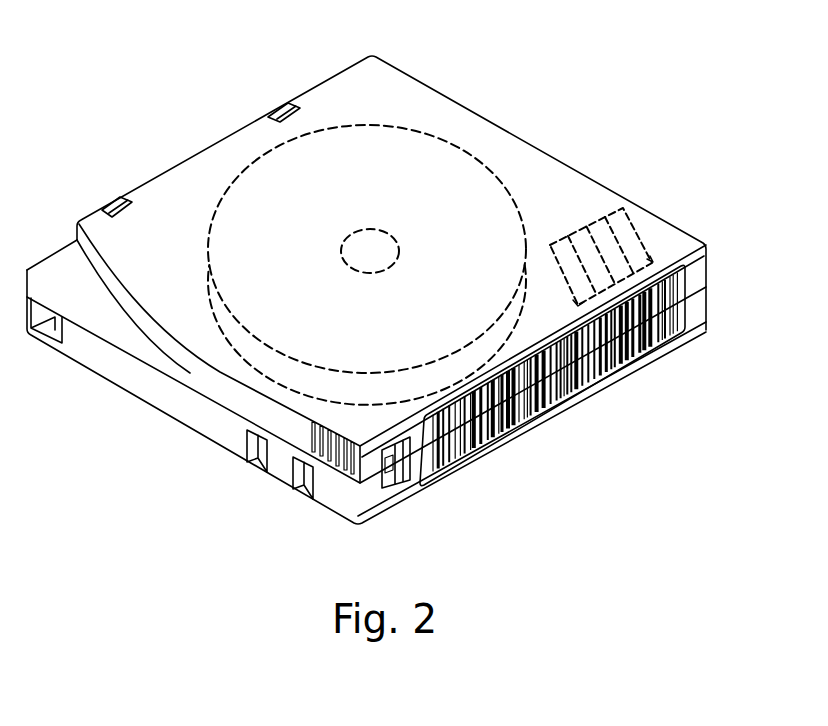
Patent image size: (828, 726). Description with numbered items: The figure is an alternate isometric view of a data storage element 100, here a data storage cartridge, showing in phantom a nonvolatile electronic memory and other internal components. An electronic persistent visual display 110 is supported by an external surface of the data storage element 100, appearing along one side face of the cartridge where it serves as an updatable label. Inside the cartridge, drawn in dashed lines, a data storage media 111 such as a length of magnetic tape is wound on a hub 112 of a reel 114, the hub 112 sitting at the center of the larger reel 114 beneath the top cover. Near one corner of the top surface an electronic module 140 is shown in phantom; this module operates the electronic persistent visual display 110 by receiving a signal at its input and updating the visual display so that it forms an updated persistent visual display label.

The data storage element 100 is at (97, 447).
The electronic persistent visual display 110 is at (643, 355).
The data storage media 111 is at (282, 362).
The hub 112 is at (373, 229).
The reel 114 is at (468, 158).
The electronic module 140 is at (628, 220).